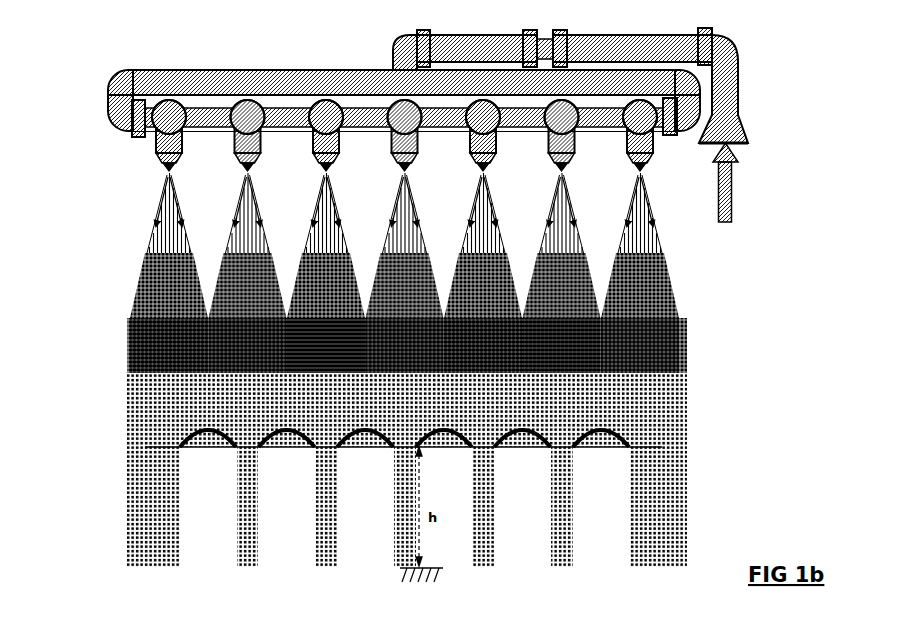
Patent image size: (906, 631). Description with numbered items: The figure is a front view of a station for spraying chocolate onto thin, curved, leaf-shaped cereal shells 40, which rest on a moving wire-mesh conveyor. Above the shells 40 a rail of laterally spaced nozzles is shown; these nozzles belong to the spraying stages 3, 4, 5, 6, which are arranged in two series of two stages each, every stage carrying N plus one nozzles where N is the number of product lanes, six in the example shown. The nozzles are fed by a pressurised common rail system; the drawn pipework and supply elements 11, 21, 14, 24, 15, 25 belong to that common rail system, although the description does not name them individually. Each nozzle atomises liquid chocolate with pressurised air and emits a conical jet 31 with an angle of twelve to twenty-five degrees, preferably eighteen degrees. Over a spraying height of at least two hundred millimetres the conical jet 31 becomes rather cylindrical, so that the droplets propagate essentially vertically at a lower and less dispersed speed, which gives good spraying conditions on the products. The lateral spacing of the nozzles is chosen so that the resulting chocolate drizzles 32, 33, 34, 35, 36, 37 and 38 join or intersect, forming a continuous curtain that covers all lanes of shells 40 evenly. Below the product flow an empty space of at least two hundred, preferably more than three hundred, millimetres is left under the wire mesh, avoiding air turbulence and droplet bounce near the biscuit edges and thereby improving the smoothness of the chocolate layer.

The spraying stage 3 is at (186, 108).
The spraying stage 4 is at (186, 108).
The spraying stage 5 is at (186, 108).
The spraying stage 6 is at (155, 155).
The gas supply line 11 is at (757, 204).
The gas supply 21 is at (727, 220).
The distributor pipe 14 is at (365, 100).
The distributor pipe 24 is at (112, 115).
The liquid pipe 15 is at (404, 84).
The liquid pipe 25 is at (207, 105).
The conical jet 31 is at (163, 257).
The chocolate drizzle 32 is at (148, 371).
The chocolate drizzle 33 is at (248, 273).
The chocolate drizzle 34 is at (326, 273).
The chocolate drizzle 35 is at (405, 273).
The chocolate drizzle 36 is at (483, 273).
The chocolate drizzle 37 is at (562, 273).
The chocolate drizzle 38 is at (643, 362).
The shells 40 is at (625, 435).